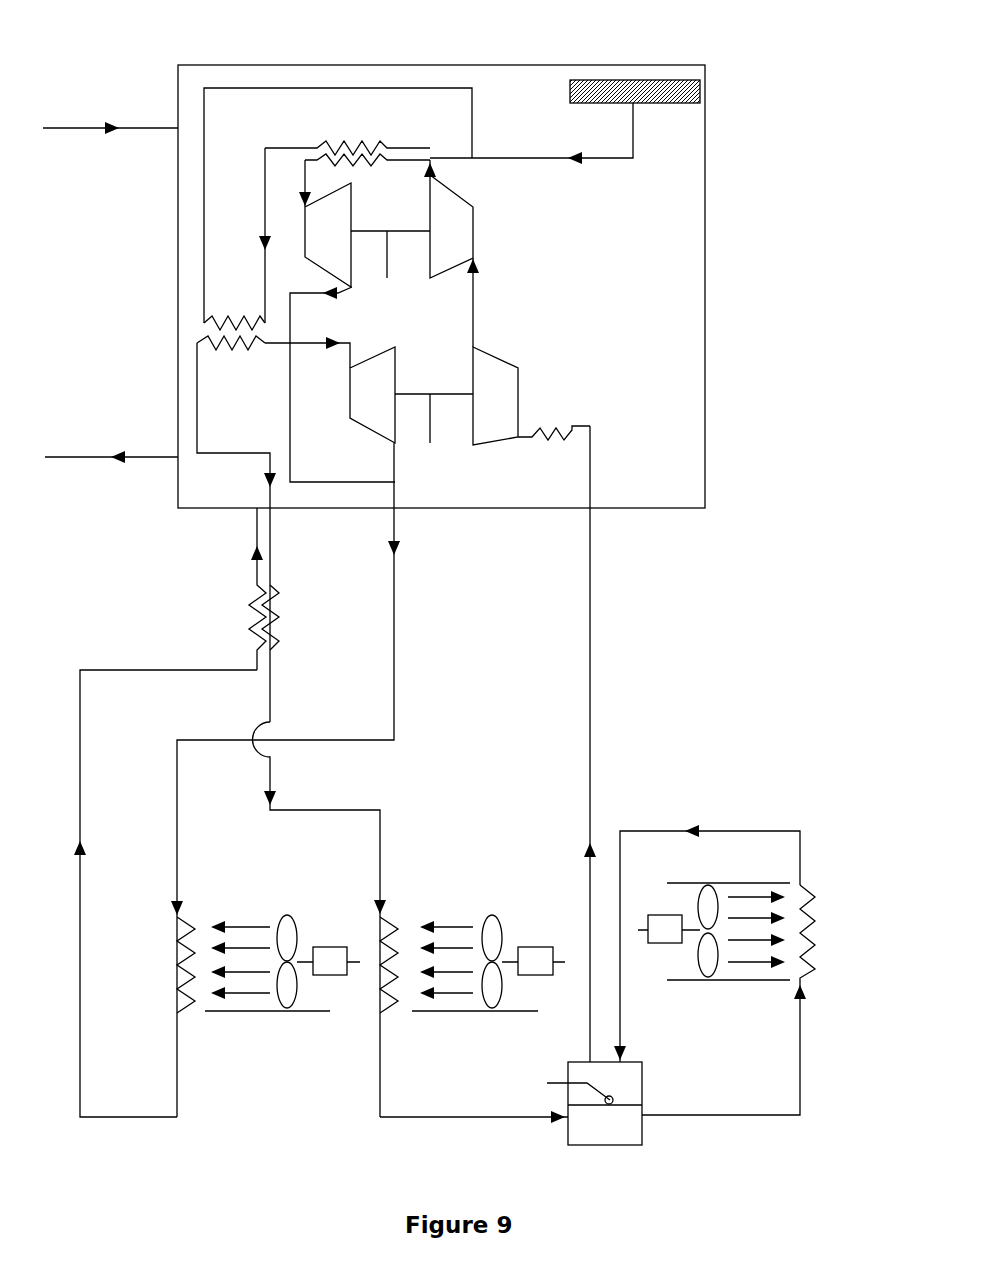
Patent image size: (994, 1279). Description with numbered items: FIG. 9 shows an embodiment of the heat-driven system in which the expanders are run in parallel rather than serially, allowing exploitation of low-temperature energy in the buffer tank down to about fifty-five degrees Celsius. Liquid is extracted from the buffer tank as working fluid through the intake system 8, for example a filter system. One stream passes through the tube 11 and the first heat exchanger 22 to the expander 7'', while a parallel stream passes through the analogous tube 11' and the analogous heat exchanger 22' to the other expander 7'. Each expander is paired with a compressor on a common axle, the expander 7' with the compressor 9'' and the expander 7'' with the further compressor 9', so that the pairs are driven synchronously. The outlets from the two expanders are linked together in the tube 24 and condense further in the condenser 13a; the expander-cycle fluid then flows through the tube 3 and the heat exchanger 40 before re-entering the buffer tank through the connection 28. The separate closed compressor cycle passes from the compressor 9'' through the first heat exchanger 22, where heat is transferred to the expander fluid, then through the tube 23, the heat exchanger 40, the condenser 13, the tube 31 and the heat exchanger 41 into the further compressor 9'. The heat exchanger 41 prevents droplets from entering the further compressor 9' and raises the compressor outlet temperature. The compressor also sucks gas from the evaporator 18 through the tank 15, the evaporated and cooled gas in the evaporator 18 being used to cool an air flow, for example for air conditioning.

The analogous tube 11' is at (338, 165).
The tube 11 is at (531, 85).
The intake system 8 is at (617, 80).
The first heat exchanger 22 is at (347, 139).
The tube 23 is at (263, 150).
The analogous heat exchanger 22' is at (231, 292).
The first expander 7' is at (328, 235).
The compressor 9'' is at (451, 226).
The connection 28 is at (354, 290).
The further expander 7'' is at (372, 395).
The further compressor 9' is at (495, 396).
The heat exchanger 41 is at (548, 432).
The heat exchanger 40 is at (278, 640).
The tube 24 is at (398, 610).
The tube 31 is at (592, 643).
The tube 3 is at (190, 668).
The condenser 13a is at (230, 907).
The condenser 13 is at (437, 912).
The evaporator 18 is at (806, 885).
The tank 15 is at (568, 1128).